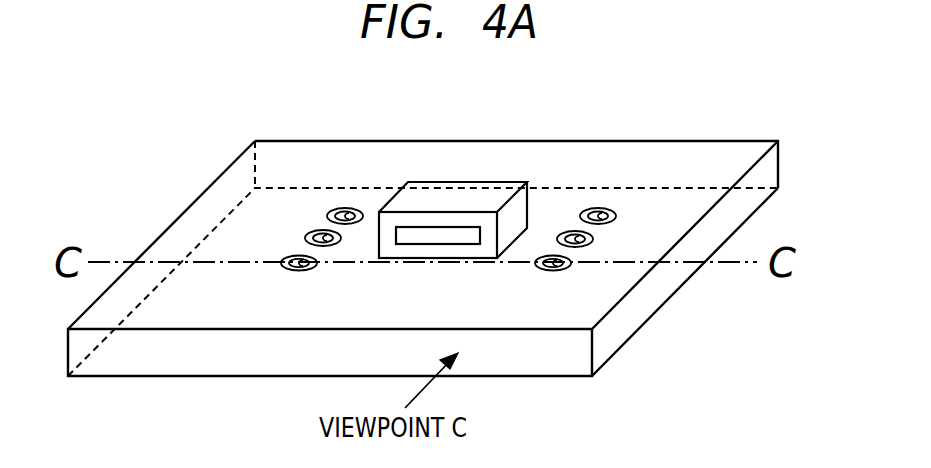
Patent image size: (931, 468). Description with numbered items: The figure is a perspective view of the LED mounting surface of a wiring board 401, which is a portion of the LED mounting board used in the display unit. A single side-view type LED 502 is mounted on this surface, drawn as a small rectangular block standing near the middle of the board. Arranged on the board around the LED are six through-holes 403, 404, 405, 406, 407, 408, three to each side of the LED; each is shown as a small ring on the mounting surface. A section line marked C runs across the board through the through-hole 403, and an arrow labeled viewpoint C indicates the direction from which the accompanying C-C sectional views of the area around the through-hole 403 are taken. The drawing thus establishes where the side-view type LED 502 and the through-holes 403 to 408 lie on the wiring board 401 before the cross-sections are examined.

The wiring board 401 is at (618, 141).
The side-view type LED 502 is at (451, 206).
The through-hole 403 is at (568, 268).
The through-hole 404 is at (593, 237).
The through-hole 405 is at (615, 211).
The through-hole 406 is at (328, 213).
The through-hole 407 is at (305, 236).
The through-hole 408 is at (281, 261).